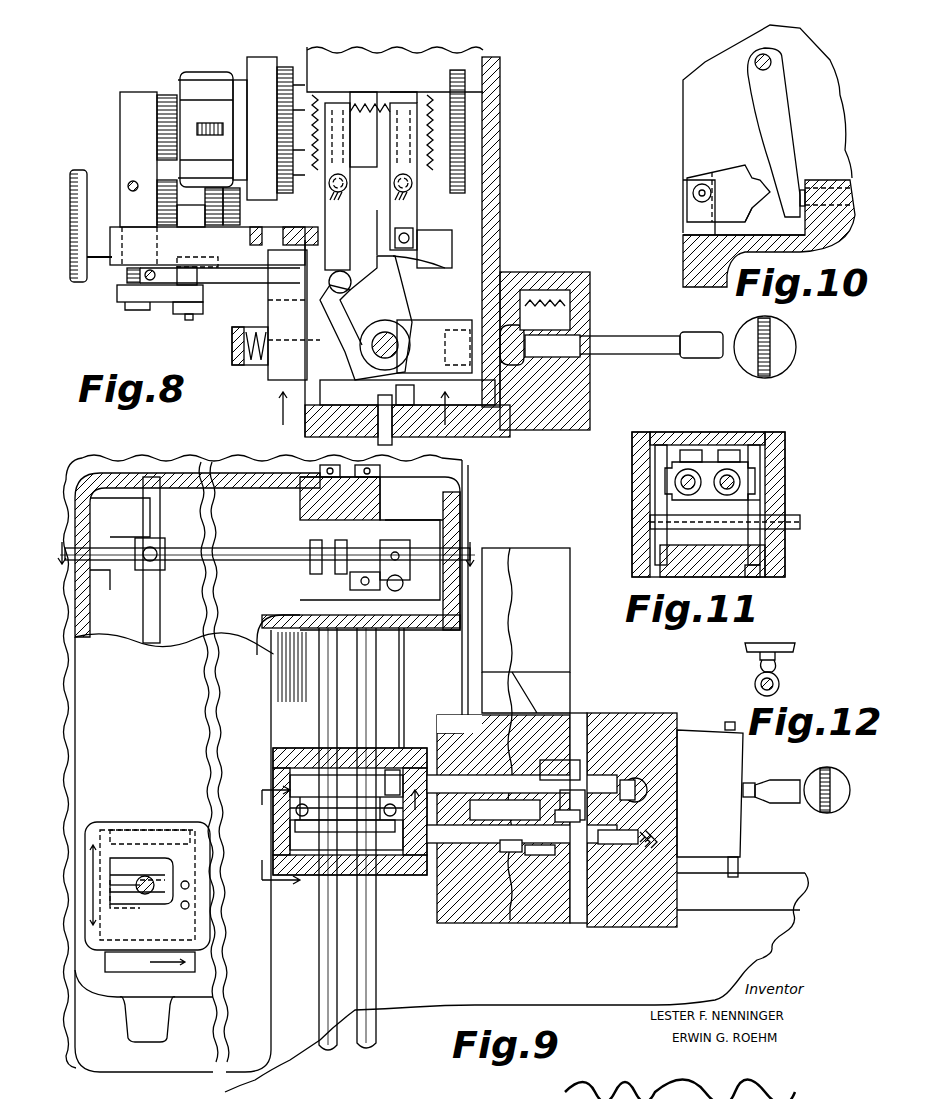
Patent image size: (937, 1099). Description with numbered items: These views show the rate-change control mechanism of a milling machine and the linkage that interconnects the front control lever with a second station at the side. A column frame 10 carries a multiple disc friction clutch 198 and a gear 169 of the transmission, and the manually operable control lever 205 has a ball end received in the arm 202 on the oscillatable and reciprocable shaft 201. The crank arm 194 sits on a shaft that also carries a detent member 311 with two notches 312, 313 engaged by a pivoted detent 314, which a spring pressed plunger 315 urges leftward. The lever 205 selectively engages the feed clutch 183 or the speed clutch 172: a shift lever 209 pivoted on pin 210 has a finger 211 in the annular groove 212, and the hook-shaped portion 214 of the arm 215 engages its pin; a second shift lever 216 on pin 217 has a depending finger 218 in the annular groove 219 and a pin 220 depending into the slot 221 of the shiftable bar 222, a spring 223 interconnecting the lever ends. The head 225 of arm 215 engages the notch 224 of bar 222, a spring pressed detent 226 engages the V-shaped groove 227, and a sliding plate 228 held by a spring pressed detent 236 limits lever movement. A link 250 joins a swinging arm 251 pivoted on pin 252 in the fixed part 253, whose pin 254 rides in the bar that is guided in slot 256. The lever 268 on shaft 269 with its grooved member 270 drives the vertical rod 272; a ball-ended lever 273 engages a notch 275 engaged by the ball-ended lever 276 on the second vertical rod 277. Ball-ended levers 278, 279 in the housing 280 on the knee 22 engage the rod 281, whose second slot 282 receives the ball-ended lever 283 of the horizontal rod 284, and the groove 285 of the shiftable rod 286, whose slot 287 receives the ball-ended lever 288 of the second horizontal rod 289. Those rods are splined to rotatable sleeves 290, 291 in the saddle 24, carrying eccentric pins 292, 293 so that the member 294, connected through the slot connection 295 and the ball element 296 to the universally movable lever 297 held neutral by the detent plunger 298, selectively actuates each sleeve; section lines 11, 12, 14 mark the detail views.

In FIG. 8, the column base / frame 10 is at (363, 419).
In FIG. 9, the section line 14- 14 is at (267, 563).
In FIG. 9, the section line 11- 11 is at (332, 790).
In FIG. 9, the section line 12- 12 is at (273, 837).
In FIG. 9, the knee 22 is at (800, 936).
In FIG. 9, the saddle 24 is at (610, 735).
In FIG. 8, the gear 169 is at (458, 72).
In FIG. 8, the speed control clutch 172 is at (425, 95).
In FIG. 8, the feed control clutch 183 is at (320, 90).
In FIG. 8, the crank arm (and its shaft 194') 194 is at (292, 370).
In FIG. 10, the crank arm (and its shaft 194') 194 is at (692, 200).
In FIG. 8, the multiple disc friction clutch 198 is at (205, 122).
In FIG. 9, the oscillatable and reciprocable shaft 201 is at (160, 605).
In FIG. 8, the arm 202 is at (420, 330).
In FIG. 8, the manually operable control lever 205 is at (635, 348).
In FIG. 9, the manually operable control lever 205 is at (148, 895).
In FIG. 8, the shift lever 209 is at (343, 210).
In FIG. 8, the pin 210 is at (347, 183).
In FIG. 8, the finger 211 is at (338, 103).
In FIG. 8, the annular groove 212 is at (347, 104).
In FIG. 8, the hook-shaped portion 214 is at (268, 313).
In FIG. 8, the arm 215 is at (396, 302).
In FIG. 8, the second shift lever 216 is at (412, 205).
In FIG. 8, the pin 217 is at (412, 183).
In FIG. 8, the depending finger 218 is at (405, 100).
In FIG. 8, the annular groove 219 is at (406, 92).
In FIG. 8, the pin 220 is at (430, 250).
In FIG. 8, the slot 221 is at (415, 232).
In FIG. 8, the shiftable bar 222 is at (436, 263).
In FIG. 8, the spring 223 is at (370, 106).
In FIG. 8, the notch 224 is at (378, 250).
In FIG. 8, the head 225 is at (395, 268).
In FIG. 8, the spring pressed detent 226 is at (378, 440).
In FIG. 8, the V-shaped groove 227 is at (380, 360).
In FIG. 8, the sliding plate 228 is at (578, 275).
In FIG. 9, the sliding plate 228 is at (182, 972).
In FIG. 8, the spring pressed detent 236 is at (556, 300).
In FIG. 8, the link 250 is at (195, 314).
In FIG. 8, the swinging arm 251 is at (165, 302).
In FIG. 8, the pin 252 is at (125, 302).
In FIG. 8, the fixed part 253 is at (122, 280).
In FIG. 8, the pin 254 is at (200, 268).
In FIG. 8, the slot 256 is at (130, 220).
In FIG. 9, the lever 268 is at (163, 550).
In FIG. 9, the shaft 269 is at (290, 540).
In FIG. 9, the annular grooved member 270 is at (310, 545).
In FIG. 11, the vertically rotatable rod 272 is at (692, 450).
In FIG. 9, the vertically rotatable rod 272 is at (311, 853).
In FIG. 9, the ball-ended lever 273 is at (397, 540).
In FIG. 9, the notch 275 is at (403, 584).
In FIG. 9, the ball-ended lever 276 is at (372, 592).
In FIG. 11, the second vertical rod 277 is at (727, 469).
In FIG. 9, the second vertical rod 277 is at (376, 1038).
In FIG. 11, the ball-ended lever 278 is at (682, 470).
In FIG. 11, the ball-ended lever 279 is at (738, 450).
In FIG. 11, the housing 280 is at (745, 575).
In FIG. 11, the rod 281 is at (665, 480).
In FIG. 12, the rod 281 is at (793, 645).
In FIG. 12, the second slot 282 is at (770, 650).
In FIG. 12, the ball-ended lever 283 is at (780, 665).
In FIG. 12, the horizontal rod 284 is at (780, 688).
In FIG. 9, the horizontal rod 284 is at (303, 875).
In FIG. 11, the groove 285 is at (762, 468).
In FIG. 11, the shiftable rod 286 is at (757, 498).
In FIG. 11, the second slot 287 is at (765, 520).
In FIG. 9, the ball-ended lever 288 is at (392, 748).
In FIG. 9, the second horizontal rod 289 is at (290, 770).
In FIG. 9, the rotatable sleeve 290 is at (587, 735).
In FIG. 9, the rotatable sleeve 291 is at (512, 850).
In FIG. 9, the eccentric pin 292 is at (540, 855).
In FIG. 9, the eccentric pin 293 is at (580, 740).
In FIG. 9, the member 294 is at (620, 750).
In FIG. 9, the slot / ball-ended slot connection 295 is at (565, 835).
In FIG. 9, the ball 296 is at (640, 780).
In FIG. 9, the universally movable lever 297 is at (770, 782).
In FIG. 9, the detent plunger 298 is at (622, 845).
In FIG. 10, the detent member 311 is at (710, 205).
In FIG. 10, the notch 312 is at (755, 215).
In FIG. 10, the notch 313 is at (755, 168).
In FIG. 10, the pivoted detent 314 is at (785, 118).
In FIG. 8, the spring pressed plunger 315 is at (402, 437).
In FIG. 10, the spring pressed plunger 315 is at (808, 180).